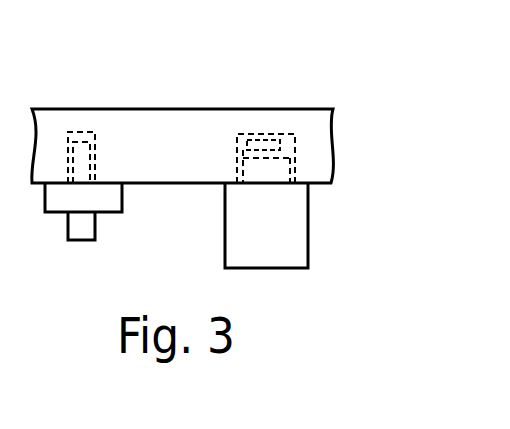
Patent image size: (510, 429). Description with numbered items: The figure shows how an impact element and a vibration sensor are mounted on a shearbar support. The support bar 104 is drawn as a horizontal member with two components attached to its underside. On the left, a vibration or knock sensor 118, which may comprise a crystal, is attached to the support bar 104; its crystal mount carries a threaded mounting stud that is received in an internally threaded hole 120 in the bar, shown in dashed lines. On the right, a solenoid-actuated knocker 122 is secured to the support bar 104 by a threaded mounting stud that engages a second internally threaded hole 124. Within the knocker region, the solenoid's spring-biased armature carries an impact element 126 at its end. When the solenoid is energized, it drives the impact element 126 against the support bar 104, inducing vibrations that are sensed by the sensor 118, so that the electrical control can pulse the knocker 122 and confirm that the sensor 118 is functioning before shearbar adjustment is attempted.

The support bar 104 is at (267, 117).
The vibration or knock sensor 118 is at (122, 197).
The internally threaded hole 120 is at (75, 143).
The solenoid-actuated knocker 122 is at (224, 245).
The internally threaded hole 124 is at (243, 155).
The impact element 126 is at (260, 140).